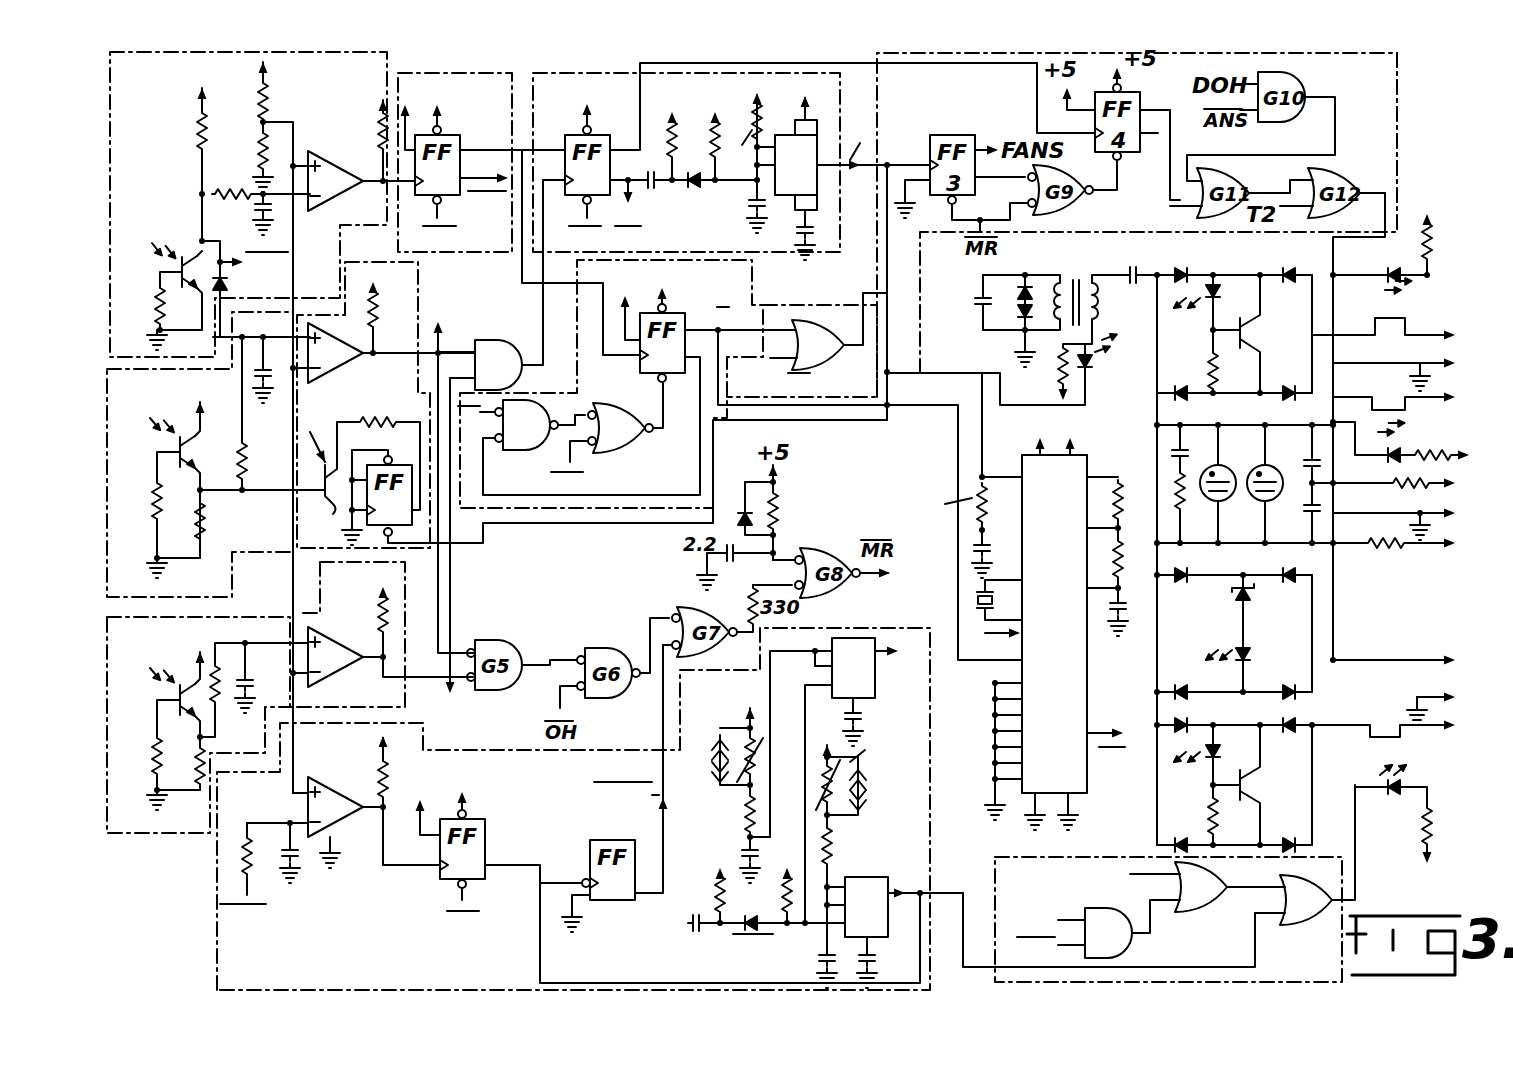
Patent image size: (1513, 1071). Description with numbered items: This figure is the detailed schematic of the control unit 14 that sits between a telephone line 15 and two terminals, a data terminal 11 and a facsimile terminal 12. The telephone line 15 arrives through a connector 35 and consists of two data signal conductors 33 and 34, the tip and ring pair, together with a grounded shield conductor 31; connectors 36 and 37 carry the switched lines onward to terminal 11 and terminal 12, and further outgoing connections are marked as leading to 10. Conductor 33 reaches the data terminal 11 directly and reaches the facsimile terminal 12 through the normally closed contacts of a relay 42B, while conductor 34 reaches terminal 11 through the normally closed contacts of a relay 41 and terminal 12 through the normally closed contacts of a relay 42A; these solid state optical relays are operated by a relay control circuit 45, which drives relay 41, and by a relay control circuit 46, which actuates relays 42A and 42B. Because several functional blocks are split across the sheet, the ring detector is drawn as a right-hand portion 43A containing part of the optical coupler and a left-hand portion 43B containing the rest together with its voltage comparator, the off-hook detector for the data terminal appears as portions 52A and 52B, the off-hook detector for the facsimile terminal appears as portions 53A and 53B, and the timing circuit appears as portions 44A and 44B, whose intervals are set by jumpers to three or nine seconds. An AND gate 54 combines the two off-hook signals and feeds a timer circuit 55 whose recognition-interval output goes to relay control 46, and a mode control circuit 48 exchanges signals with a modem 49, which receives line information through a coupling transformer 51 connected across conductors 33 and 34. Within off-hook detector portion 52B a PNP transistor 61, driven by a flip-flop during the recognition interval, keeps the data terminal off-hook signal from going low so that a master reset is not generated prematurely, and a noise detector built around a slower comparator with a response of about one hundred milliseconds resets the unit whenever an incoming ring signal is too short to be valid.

The control unit 14 is at (1405, 82).
The relay control circuit 46 is at (1398, 118).
The ring detector circuit portion 43B is at (345, 228).
The flip-flop FF1 answer latch 44A is at (492, 252).
The timer circuit 55 is at (790, 258).
The AND gate 54 is at (540, 344).
The mode control circuit 48 is at (654, 510).
The PNP transistor 61 is at (588, 405).
The off-hook detector circuit 52B is at (252, 570).
The optocoupler OC3 receiver circuit 53B is at (130, 835).
The timer and comparator section 44B is at (932, 822).
The relay control circuit 45 is at (995, 862).
The modem 49 is at (1013, 680).
The coupling transformer 51 is at (1068, 270).
The optocoupler OC3 transmitter bridge 53A is at (1243, 323).
The optocoupler OC1 transmitter 43A is at (1295, 647).
The optocoupler OC2 transmitter bridge 52A is at (1180, 812).
The relay 42A is at (1417, 296).
The relay 42B is at (1418, 426).
The relay 41 is at (1390, 822).
The connector 37 is at (1468, 320).
The connector 36 is at (1472, 737).
The data signal conductor 33 is at (1150, 384).
The data signal conductor 34 is at (1157, 457).
The shield conductor 31 is at (1370, 522).
The connector 35 is at (1474, 560).
The telephone line 10 is at (1477, 358).
The data terminal 11 is at (1414, 691).
The facsimile terminal 12 is at (1413, 381).
The telephone line 15 is at (1416, 510).